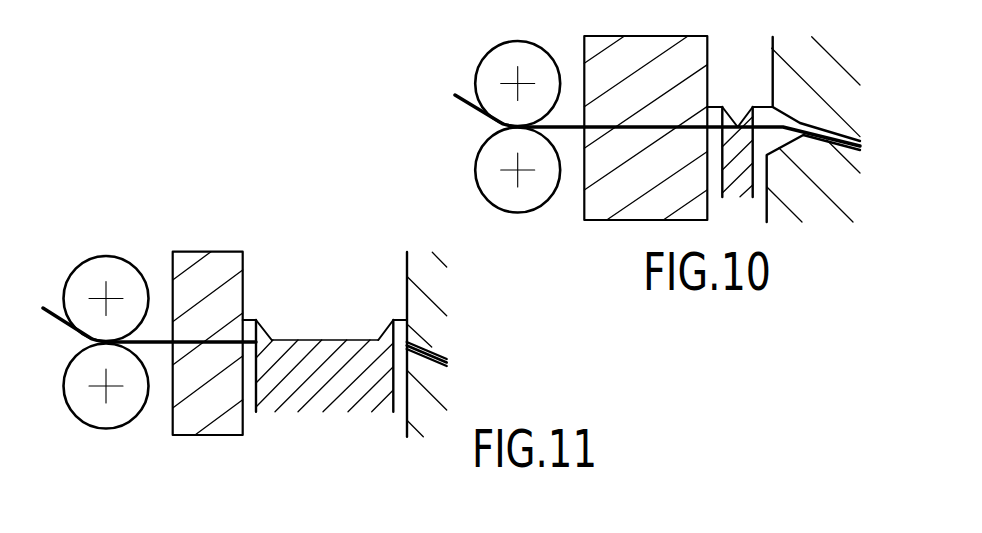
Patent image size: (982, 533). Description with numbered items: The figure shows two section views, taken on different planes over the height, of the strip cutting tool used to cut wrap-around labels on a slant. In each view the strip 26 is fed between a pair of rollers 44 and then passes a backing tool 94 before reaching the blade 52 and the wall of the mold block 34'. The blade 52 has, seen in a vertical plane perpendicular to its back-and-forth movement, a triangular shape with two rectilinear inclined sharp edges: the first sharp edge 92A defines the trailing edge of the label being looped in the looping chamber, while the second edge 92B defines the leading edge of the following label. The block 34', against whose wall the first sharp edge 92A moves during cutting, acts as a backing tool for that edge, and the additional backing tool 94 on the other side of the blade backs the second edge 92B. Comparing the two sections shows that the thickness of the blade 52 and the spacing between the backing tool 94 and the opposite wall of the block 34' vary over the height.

In FIG. 10, the rollers 44 is at (500, 53).
In FIG. 11, the rollers 44 is at (88, 272).
In FIG. 10, the strip 26 is at (470, 115).
In FIG. 11, the strip 26 is at (54, 327).
In FIG. 10, the additional backing tool 94 is at (633, 48).
In FIG. 11, the additional backing tool 94 is at (210, 267).
In FIG. 10, the blade 52 is at (735, 193).
In FIG. 11, the blade 52 is at (322, 403).
In FIG. 10, the second edge 92B is at (723, 100).
In FIG. 11, the second edge 92B is at (271, 309).
In FIG. 10, the first sharp edge 92A is at (750, 100).
In FIG. 11, the first sharp edge 92A is at (392, 320).
In FIG. 10, the mold block 34' is at (837, 129).
In FIG. 11, the mold block 34' is at (450, 344).